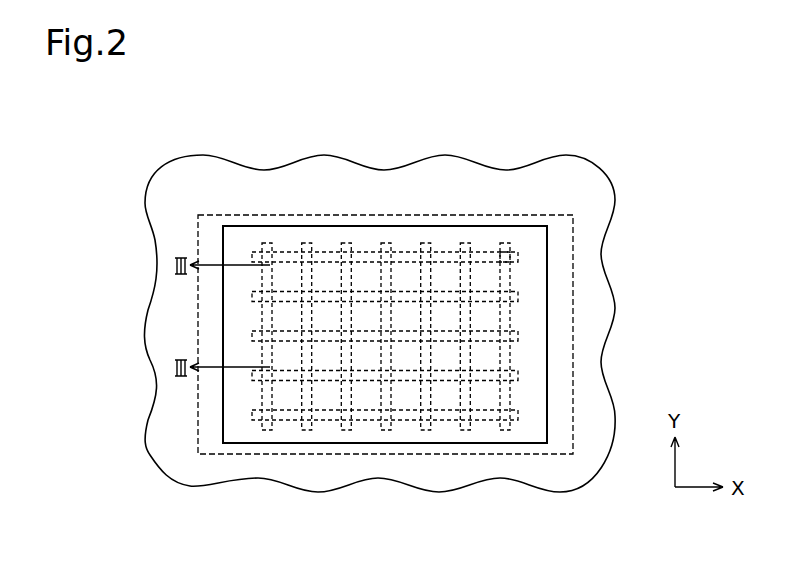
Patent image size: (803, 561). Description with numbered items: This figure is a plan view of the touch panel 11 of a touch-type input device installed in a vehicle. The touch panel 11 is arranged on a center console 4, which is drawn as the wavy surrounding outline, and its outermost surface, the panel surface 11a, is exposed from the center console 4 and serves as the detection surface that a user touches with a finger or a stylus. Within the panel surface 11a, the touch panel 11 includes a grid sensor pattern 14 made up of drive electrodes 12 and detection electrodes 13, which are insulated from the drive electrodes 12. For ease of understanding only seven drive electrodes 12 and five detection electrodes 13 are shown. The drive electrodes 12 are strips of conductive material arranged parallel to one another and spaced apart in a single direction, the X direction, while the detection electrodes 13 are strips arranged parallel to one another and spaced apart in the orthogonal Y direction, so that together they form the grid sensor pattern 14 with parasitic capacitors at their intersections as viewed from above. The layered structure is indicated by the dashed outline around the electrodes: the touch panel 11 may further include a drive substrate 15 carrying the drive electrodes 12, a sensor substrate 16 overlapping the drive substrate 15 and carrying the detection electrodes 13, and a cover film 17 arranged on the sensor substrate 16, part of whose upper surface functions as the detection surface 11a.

The center console 4 is at (151, 228).
The touch panel 11 is at (583, 211).
The panel surface 11a is at (540, 277).
The drive electrodes 12 is at (465, 430).
The detection electrodes 13 is at (518, 335).
The grid sensor pattern 14 is at (510, 242).
The drive substrate 15 is at (465, 334).
The sensor substrate 16 is at (465, 334).
The cover film 17 is at (573, 233).